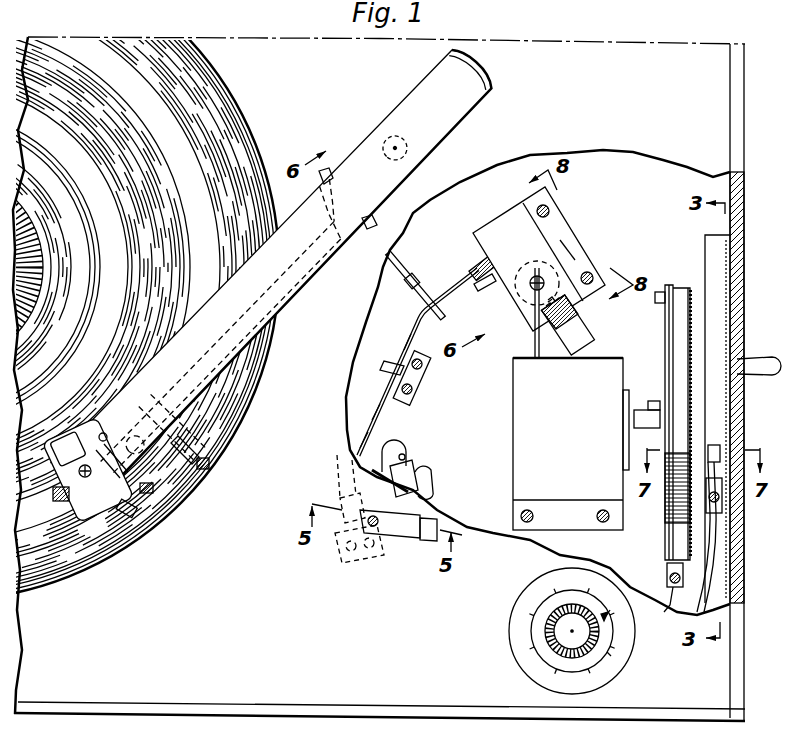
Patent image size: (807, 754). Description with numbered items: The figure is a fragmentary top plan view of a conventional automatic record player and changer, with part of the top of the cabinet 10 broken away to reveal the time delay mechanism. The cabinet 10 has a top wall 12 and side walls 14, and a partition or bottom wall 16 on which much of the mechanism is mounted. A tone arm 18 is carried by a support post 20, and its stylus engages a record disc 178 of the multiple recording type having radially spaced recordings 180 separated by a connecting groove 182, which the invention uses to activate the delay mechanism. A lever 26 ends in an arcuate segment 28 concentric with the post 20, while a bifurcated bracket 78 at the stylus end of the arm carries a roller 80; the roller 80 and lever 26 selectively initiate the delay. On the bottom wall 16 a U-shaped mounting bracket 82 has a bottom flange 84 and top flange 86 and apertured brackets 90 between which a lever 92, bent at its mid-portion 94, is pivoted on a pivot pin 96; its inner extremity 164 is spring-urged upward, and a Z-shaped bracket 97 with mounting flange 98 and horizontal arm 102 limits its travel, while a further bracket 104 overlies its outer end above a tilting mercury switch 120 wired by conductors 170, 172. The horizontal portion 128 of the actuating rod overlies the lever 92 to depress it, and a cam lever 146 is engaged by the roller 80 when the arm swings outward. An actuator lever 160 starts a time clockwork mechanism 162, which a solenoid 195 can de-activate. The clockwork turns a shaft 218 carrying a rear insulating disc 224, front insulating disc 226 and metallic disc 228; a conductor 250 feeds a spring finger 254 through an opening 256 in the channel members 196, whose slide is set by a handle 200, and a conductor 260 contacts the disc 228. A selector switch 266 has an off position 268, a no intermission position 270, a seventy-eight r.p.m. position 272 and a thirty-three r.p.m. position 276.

The cabinet 10 is at (698, 42).
The top wall 12 is at (556, 62).
The side walls 14 is at (745, 197).
The partition or bottom wall 16 is at (612, 163).
The tone arm 18 is at (397, 118).
The support post 20 is at (406, 139).
The lever 26 is at (340, 268).
The segment 28 is at (327, 172).
The bifurcated bracket 78 is at (616, 611).
The roller 80 is at (200, 465).
The U-shaped mounting bracket 82 is at (574, 213).
The bottom flange 84 is at (575, 250).
The top flange 86 is at (487, 232).
The apertured brackets 90 is at (492, 284).
The lever 92 is at (370, 408).
The bent mid-portion 94 is at (418, 312).
The pivot pin 96 is at (473, 267).
The Z-shaped bracket 97 is at (388, 353).
The mounting flange 98 is at (415, 373).
The horizontally extending arm 102 is at (397, 362).
The bracket 104 is at (352, 560).
The mercury switch element 120 is at (422, 488).
The horizontal laterally extending portion 128 is at (407, 252).
The cam lever 146 is at (402, 528).
The actuator lever 160 is at (535, 332).
The time clockwork mechanism 162 is at (525, 367).
The extremity 164 is at (522, 258).
The electric conductor 170 is at (378, 450).
The electric conductor 172 is at (423, 467).
The record disc 178 is at (250, 133).
The recordings or sound tracks 180 is at (157, 78).
The connecting groove 182 is at (102, 327).
The solenoid 195 is at (580, 333).
The channel members 196 is at (710, 272).
The handle 200 is at (752, 362).
The shaft 218 is at (638, 418).
The rear insulating disc 224 is at (668, 312).
The front insulating disc 226 is at (683, 325).
The metallic disc 228 is at (668, 290).
The conductor 250 is at (705, 546).
The spring finger 254 is at (717, 472).
The opening 256 is at (717, 445).
The electric conductor 260 is at (675, 595).
The selector switch 266 is at (540, 631).
The off position 268 is at (547, 580).
The no intermission position 270 is at (598, 578).
The 78 r.p.m. position 272 is at (627, 620).
The 33 r.p.m. position 276 is at (622, 663).